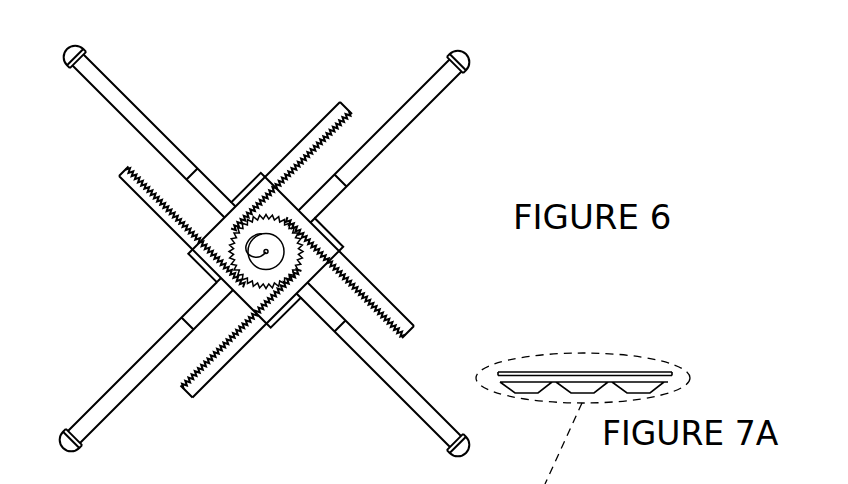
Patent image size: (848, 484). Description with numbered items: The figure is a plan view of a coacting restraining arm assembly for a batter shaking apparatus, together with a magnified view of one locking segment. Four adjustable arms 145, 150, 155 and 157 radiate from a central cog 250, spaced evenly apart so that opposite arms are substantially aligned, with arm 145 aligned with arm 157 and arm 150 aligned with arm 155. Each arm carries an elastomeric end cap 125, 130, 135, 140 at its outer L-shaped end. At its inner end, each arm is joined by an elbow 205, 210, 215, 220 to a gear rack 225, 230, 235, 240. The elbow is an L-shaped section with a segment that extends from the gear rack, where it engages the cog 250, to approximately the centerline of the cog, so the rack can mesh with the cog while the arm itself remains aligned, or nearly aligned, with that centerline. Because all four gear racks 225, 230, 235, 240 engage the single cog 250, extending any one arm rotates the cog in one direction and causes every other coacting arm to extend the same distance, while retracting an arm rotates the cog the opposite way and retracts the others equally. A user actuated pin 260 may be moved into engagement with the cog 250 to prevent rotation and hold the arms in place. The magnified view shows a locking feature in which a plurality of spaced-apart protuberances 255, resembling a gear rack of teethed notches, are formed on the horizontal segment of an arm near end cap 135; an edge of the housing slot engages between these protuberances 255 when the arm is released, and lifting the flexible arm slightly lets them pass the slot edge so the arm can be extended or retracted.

In FIG. 6, the elastomeric end cap 125 is at (443, 450).
In FIG. 6, the elastomeric end cap 130 is at (61, 436).
In FIG. 6, the elastomeric end cap 135 is at (470, 62).
In FIG. 7A, the elastomeric end cap 135 is at (614, 483).
In FIG. 6, the elastomeric end cap 140 is at (88, 52).
In FIG. 6, the adjustable arm 145 is at (396, 395).
In FIG. 6, the adjustable arm 150 is at (117, 397).
In FIG. 6, the adjustable arm 155 is at (406, 128).
In FIG. 6, the adjustable arm 157 is at (141, 112).
In FIG. 6, the elbow 205 is at (282, 317).
In FIG. 6, the elbow 210 is at (214, 279).
In FIG. 6, the elbow 215 is at (322, 223).
In FIG. 6, the elbow 220 is at (243, 192).
In FIG. 6, the gear rack 225 is at (181, 386).
In FIG. 6, the gear rack 230 is at (123, 170).
In FIG. 6, the gear rack 235 is at (406, 338).
In FIG. 6, the gear rack 240 is at (349, 117).
In FIG. 6, the cog 250 is at (236, 224).
In FIG. 7A, the protuberances 255 is at (567, 388).
In FIG. 6, the user actuated pin 260 is at (236, 238).